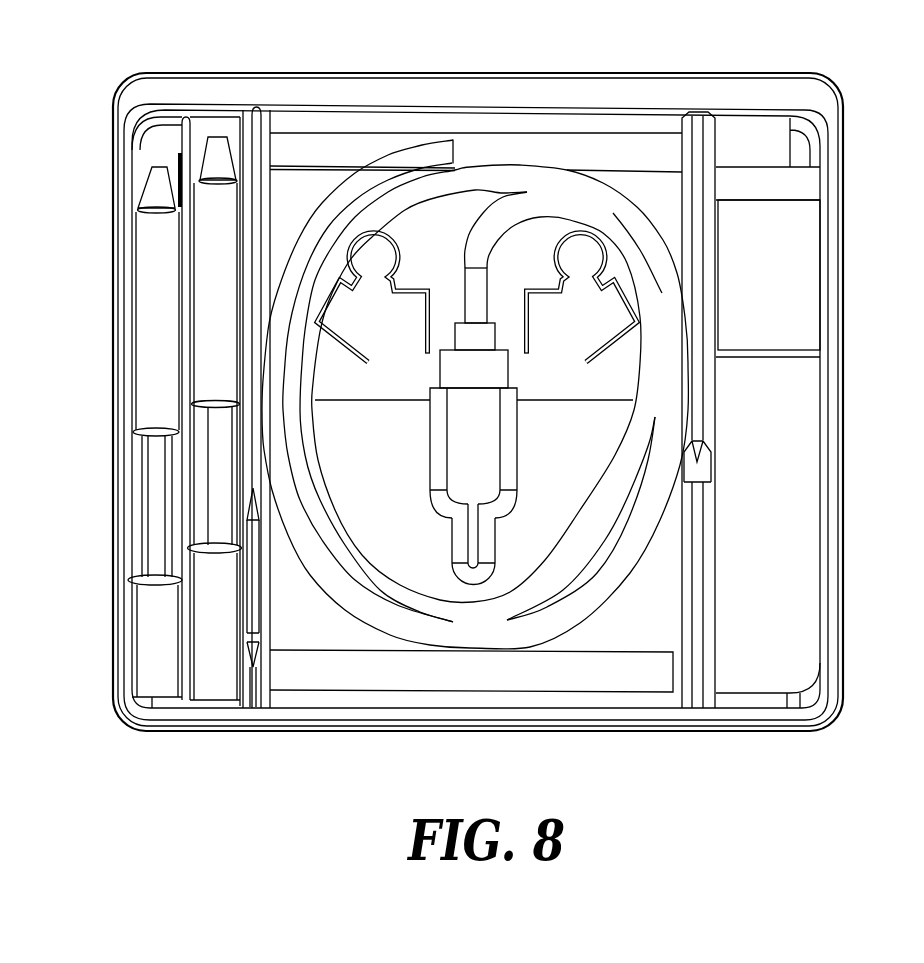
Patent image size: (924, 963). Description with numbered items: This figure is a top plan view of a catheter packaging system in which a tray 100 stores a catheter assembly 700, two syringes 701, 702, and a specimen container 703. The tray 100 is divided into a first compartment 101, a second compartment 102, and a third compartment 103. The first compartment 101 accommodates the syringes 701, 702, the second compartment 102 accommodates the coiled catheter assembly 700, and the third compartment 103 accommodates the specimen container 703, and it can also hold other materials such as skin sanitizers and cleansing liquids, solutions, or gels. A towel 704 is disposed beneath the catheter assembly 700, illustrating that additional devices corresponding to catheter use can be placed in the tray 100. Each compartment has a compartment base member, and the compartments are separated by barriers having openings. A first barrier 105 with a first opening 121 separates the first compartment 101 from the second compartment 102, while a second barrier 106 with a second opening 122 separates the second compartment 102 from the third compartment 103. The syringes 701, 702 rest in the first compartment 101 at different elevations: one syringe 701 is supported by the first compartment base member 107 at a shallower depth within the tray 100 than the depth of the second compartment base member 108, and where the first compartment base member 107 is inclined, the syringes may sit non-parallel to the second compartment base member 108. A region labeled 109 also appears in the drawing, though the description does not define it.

The tray 100 is at (860, 194).
The first compartment 101 is at (210, 662).
The second compartment 102 is at (475, 455).
The third compartment 103 is at (770, 665).
The first barrier 105 is at (262, 112).
The second barrier 106 is at (697, 137).
The first compartment base member 107 is at (231, 629).
The second compartment base member 108 is at (455, 246).
The lower right compartment region 109 is at (768, 547).
The first opening 121 is at (266, 567).
The second opening 122 is at (703, 562).
The catheter assembly 700 is at (491, 445).
The syringe 701 is at (142, 302).
The syringe 702 is at (216, 213).
The specimen container 703 is at (783, 258).
The towel 704 is at (621, 676).